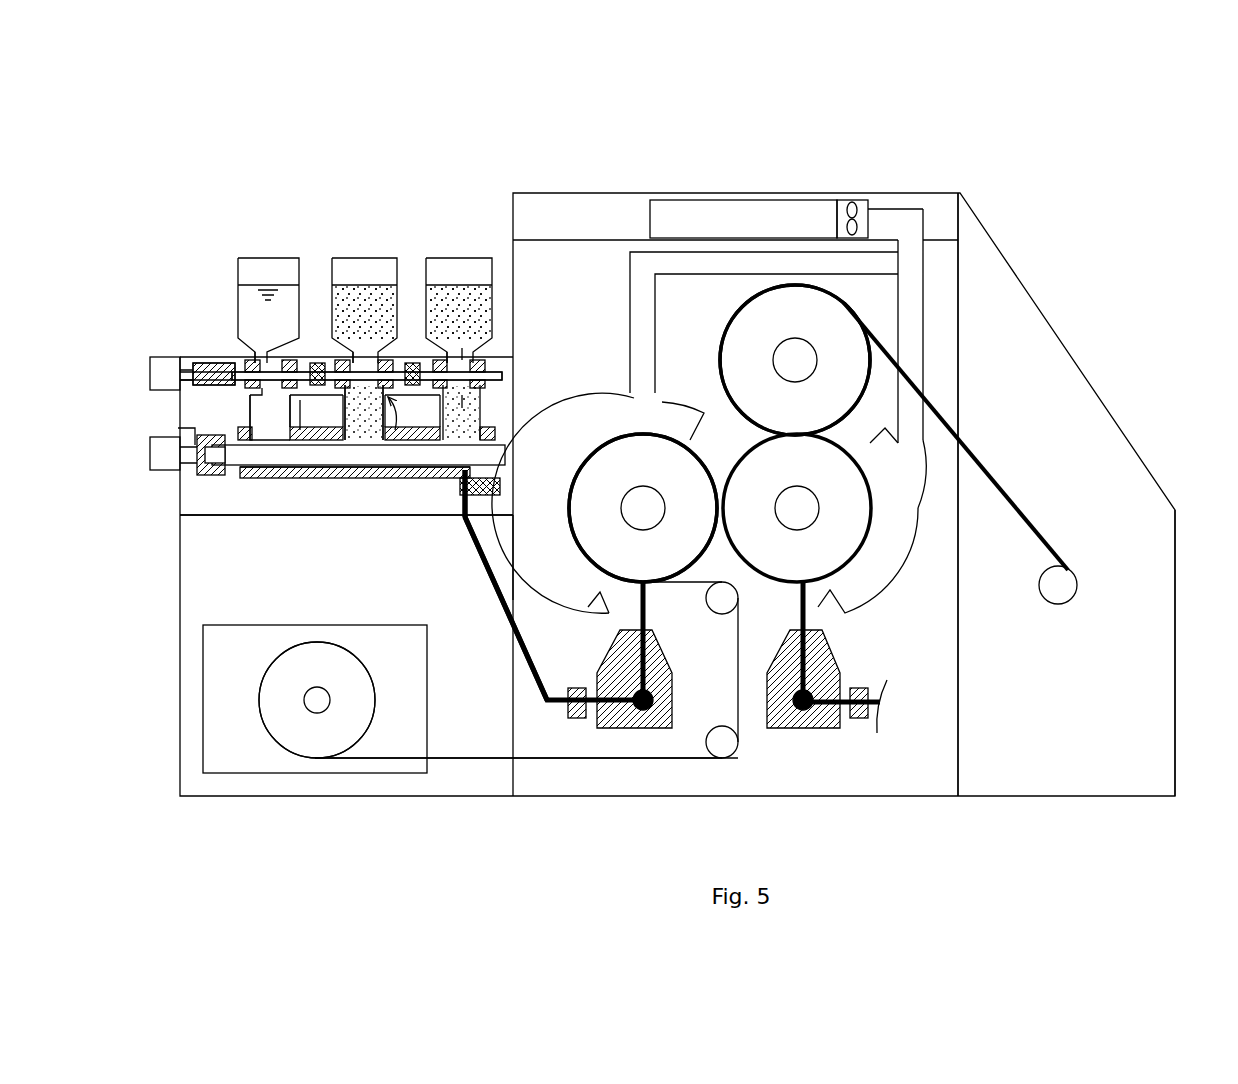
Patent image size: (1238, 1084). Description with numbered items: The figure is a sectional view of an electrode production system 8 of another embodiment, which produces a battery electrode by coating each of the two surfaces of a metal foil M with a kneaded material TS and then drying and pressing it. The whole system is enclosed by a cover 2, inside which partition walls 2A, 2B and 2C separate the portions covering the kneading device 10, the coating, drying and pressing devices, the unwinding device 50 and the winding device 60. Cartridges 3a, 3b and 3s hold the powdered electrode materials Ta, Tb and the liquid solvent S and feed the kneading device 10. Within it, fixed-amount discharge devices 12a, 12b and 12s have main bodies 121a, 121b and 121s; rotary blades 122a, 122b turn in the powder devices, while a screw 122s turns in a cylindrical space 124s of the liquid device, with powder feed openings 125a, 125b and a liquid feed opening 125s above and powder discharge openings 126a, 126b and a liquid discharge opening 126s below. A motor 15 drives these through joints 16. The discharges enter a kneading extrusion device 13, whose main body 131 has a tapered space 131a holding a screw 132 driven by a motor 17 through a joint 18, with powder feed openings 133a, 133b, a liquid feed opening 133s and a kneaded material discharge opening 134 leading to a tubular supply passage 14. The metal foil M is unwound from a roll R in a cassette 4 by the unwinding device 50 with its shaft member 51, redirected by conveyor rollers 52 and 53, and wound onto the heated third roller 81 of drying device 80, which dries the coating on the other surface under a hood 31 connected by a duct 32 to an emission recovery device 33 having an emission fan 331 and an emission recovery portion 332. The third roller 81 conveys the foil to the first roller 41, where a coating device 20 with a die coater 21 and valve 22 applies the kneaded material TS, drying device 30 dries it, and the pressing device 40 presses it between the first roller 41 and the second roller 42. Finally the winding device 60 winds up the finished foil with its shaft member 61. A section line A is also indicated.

The cover 2 is at (1040, 315).
The partition wall 2A is at (517, 555).
The partition wall 2B is at (425, 517).
The partition wall 2C is at (960, 383).
The cartridge 3a is at (458, 268).
The cartridge 3b is at (362, 290).
The cartridge 3s is at (244, 260).
The cassette 4 is at (225, 688).
The electrode production system 8 is at (1048, 206).
The kneading device 10 is at (331, 431).
The fixed-amount discharge device 12a is at (331, 418).
The fixed-amount discharge device 12b is at (364, 450).
The fixed-amount discharge device 12s is at (298, 440).
The kneading extrusion device 13 is at (298, 513).
The supply passage 14 is at (503, 575).
The motor 15 is at (178, 364).
The joint 16 is at (215, 364).
The motor 17 is at (180, 447).
The joint 18 is at (200, 462).
The coating device 20 is at (676, 654).
The die coater 21 is at (647, 720).
The valve 22 is at (580, 720).
The drying device 30 is at (895, 598).
The hood 31 is at (566, 574).
The duct 32 is at (630, 385).
The emission recovery device 33 is at (761, 179).
The pressing device 40 is at (570, 312).
The first roller 41 is at (757, 460).
The second roller 42 is at (730, 380).
The unwinding device 50 is at (276, 730).
The shaft member 51 is at (312, 710).
The roller 52 is at (725, 743).
The roller 53 is at (724, 605).
The winding device 60 is at (1160, 553).
The shaft member 61 is at (1077, 585).
The drying device 80 is at (717, 431).
The third roller 81 is at (616, 462).
The main body 121a is at (499, 365).
The main body 121b is at (398, 368).
The main body 121s is at (262, 360).
The rotary blade 122a is at (503, 378).
The rotary blade 122b is at (408, 377).
The screw 122s is at (165, 390).
The cylindrical space 124s is at (240, 362).
The powder feed opening 125a is at (430, 363).
The powder feed opening 125b is at (316, 365).
The liquid feed opening 125s is at (258, 362).
The powder discharge opening 126a is at (455, 442).
The powder discharge opening 126b is at (352, 442).
The liquid discharge opening 126s is at (262, 400).
The main body 131 is at (250, 478).
The screw 132 is at (268, 468).
The space 131a is at (280, 478).
The powder feed opening 133a is at (455, 442).
The powder feed opening 133b is at (340, 442).
The liquid feed opening 133s is at (245, 428).
The kneaded material discharge opening 134 is at (490, 495).
The emission fan 331 is at (852, 198).
The emission recovery portion 332 is at (786, 208).
The section line A is at (462, 352).
The metal foil M is at (455, 760).
The roll R is at (315, 745).
The solvent S is at (267, 288).
The electrode material Ta is at (466, 290).
The electrode material Tb is at (350, 285).
The kneaded material TS is at (485, 565).